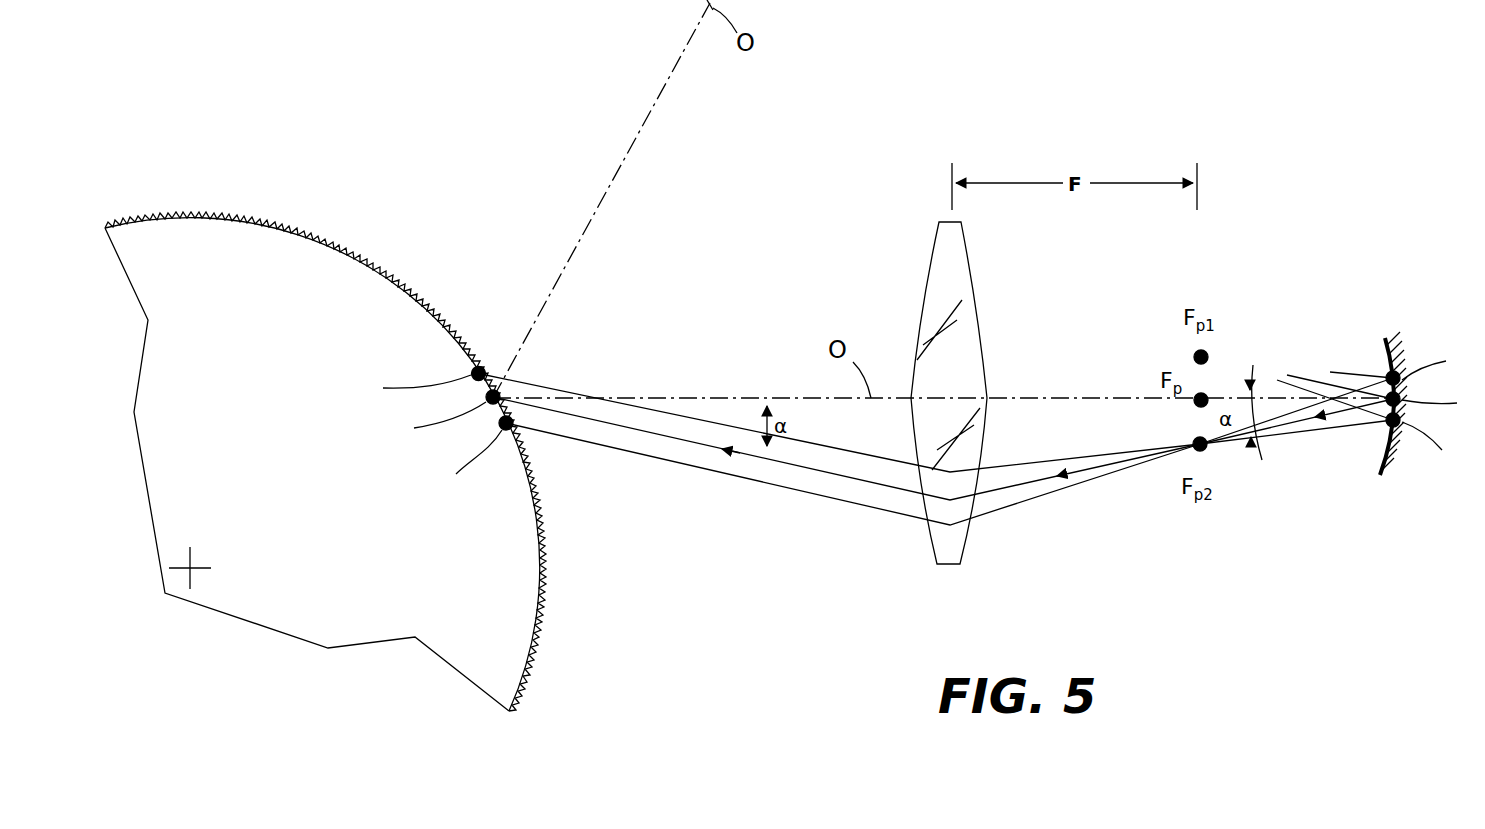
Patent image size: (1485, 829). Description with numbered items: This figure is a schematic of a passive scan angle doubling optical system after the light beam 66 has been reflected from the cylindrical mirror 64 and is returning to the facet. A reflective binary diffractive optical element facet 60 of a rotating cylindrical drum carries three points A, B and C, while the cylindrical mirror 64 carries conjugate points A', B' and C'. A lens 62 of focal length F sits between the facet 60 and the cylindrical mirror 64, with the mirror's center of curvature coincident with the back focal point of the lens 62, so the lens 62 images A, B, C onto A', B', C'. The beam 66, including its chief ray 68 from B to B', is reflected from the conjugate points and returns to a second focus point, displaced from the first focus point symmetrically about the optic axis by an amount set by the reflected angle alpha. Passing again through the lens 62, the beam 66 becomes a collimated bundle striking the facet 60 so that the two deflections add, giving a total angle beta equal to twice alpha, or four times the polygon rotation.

The reflective binary diffractive optical element facet 60 is at (397, 316).
The lens 62 is at (930, 544).
The cylindrical mirror 64 is at (1383, 348).
The light beam 66 is at (775, 488).
The chief ray 68 is at (848, 478).